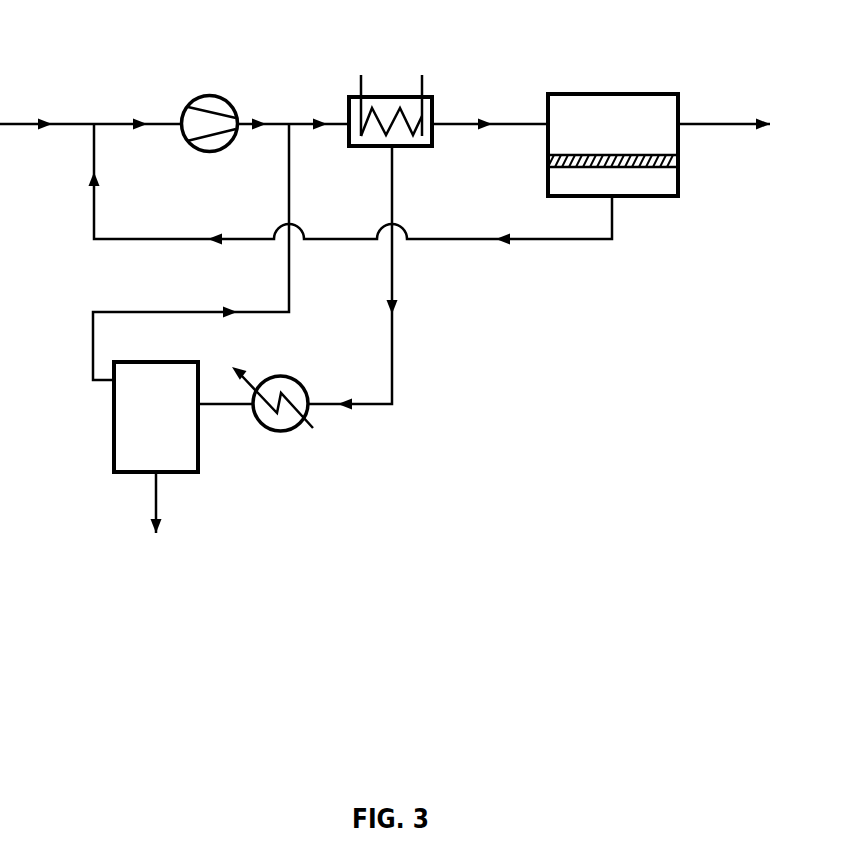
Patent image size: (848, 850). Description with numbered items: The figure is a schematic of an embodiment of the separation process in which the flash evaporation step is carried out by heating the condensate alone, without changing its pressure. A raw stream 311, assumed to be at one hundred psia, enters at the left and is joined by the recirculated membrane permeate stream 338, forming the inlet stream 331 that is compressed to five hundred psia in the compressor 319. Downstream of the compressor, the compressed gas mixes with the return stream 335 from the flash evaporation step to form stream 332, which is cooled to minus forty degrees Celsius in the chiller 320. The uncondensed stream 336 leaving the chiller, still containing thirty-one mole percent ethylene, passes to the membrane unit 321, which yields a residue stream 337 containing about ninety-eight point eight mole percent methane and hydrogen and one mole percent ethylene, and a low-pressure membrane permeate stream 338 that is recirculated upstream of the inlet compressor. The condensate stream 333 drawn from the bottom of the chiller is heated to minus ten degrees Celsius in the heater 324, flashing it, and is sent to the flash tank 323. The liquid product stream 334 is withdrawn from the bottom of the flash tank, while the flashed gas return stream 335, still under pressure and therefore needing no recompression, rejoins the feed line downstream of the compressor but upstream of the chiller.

The raw stream 311 is at (47, 110).
The inlet stream 331 is at (137, 110).
The compressor 319 is at (215, 96).
The stream 332 is at (293, 111).
The return stream 335 is at (191, 252).
The chiller 320 is at (430, 97).
The uncondensed stream 336 is at (490, 111).
The membrane unit 321 is at (665, 94).
The residue stream 337 is at (749, 127).
The membrane permeate stream 338 is at (351, 200).
The condensate stream 333 is at (375, 278).
The heater 324 is at (297, 430).
The flash tank 323 is at (114, 458).
The liquid product stream 334 is at (155, 519).